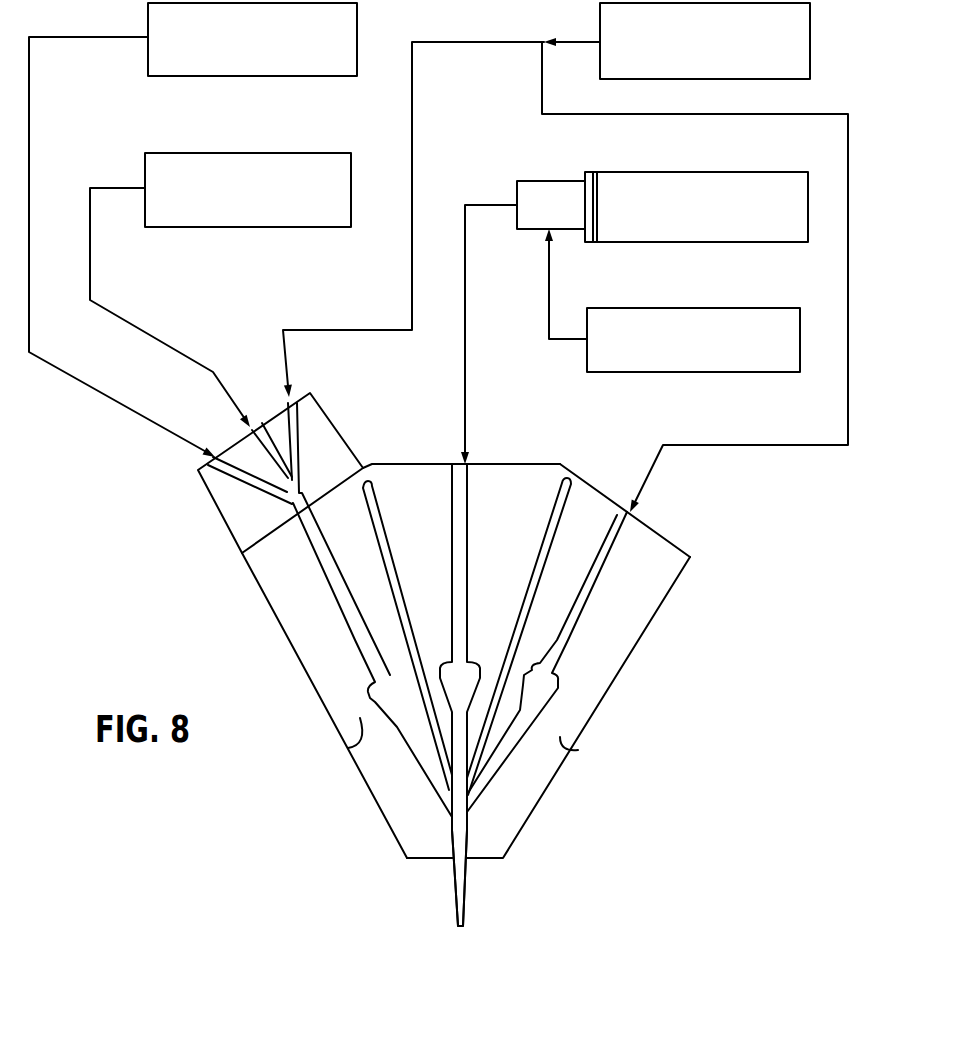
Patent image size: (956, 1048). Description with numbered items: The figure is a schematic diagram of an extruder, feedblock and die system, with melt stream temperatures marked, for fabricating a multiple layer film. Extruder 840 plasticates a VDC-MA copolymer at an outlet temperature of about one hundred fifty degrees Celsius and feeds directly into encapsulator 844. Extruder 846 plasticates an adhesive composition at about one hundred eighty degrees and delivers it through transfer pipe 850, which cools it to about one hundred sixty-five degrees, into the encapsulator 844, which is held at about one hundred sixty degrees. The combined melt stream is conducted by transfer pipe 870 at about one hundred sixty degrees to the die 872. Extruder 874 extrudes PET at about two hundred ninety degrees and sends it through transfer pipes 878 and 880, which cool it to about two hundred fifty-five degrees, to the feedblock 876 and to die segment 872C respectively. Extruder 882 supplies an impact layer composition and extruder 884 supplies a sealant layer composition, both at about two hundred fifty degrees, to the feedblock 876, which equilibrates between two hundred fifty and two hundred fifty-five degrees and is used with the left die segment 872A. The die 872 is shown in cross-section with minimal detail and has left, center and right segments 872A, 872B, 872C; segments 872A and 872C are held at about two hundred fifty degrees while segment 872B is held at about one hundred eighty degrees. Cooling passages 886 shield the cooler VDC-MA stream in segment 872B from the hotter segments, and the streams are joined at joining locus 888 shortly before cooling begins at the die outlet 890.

The extruder 884 is at (322, 52).
The extruder 882 is at (313, 202).
The extruder 874 is at (766, 51).
The transfer pipe 878 is at (412, 290).
The transfer pipe 880 is at (777, 447).
The encapsulator 844 is at (556, 180).
The extruder 840 is at (768, 217).
The extruder 846 is at (753, 350).
The transfer pipe 850 is at (549, 295).
The transfer pipe 870 is at (465, 404).
The die 872 is at (608, 714).
The left die segment 872A is at (243, 556).
The center die segment 872B is at (510, 464).
The right die segment 872C is at (608, 497).
The feedblock 876 is at (215, 505).
The cooling passages 886 is at (387, 533).
The joining locus 888 is at (466, 860).
The die outlet 890 is at (448, 862).